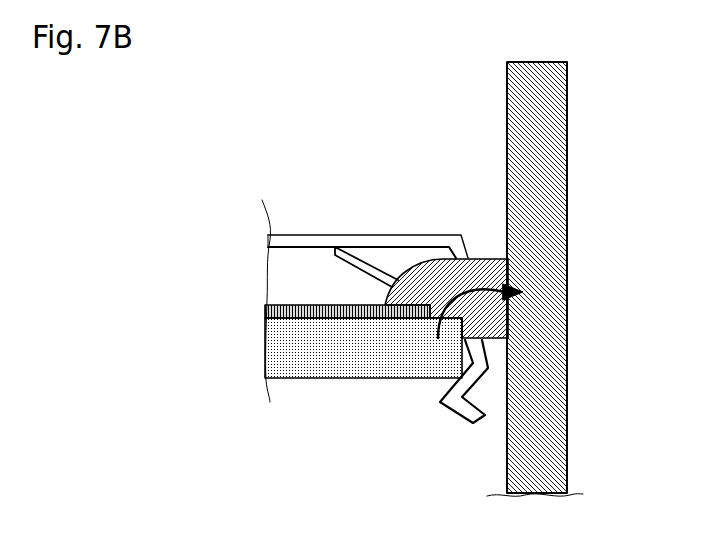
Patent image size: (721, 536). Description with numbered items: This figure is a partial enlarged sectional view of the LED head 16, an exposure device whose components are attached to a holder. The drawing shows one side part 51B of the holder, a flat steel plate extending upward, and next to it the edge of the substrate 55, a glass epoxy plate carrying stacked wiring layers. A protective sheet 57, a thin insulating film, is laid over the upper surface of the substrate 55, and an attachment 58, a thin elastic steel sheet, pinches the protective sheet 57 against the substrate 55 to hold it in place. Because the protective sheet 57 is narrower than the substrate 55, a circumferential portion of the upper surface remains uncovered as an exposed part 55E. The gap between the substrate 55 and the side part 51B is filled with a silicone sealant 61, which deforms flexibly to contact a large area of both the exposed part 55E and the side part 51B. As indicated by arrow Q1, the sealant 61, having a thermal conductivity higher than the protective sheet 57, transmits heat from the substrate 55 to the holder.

The LED head 16 is at (95, 89).
The side part 51B is at (552, 107).
The substrate 55 is at (327, 368).
The exposed part 55E is at (443, 313).
The protective sheet 57 is at (338, 303).
The attachment 58 is at (288, 236).
The sealant 61 is at (497, 328).
The arrow Q1 is at (505, 285).